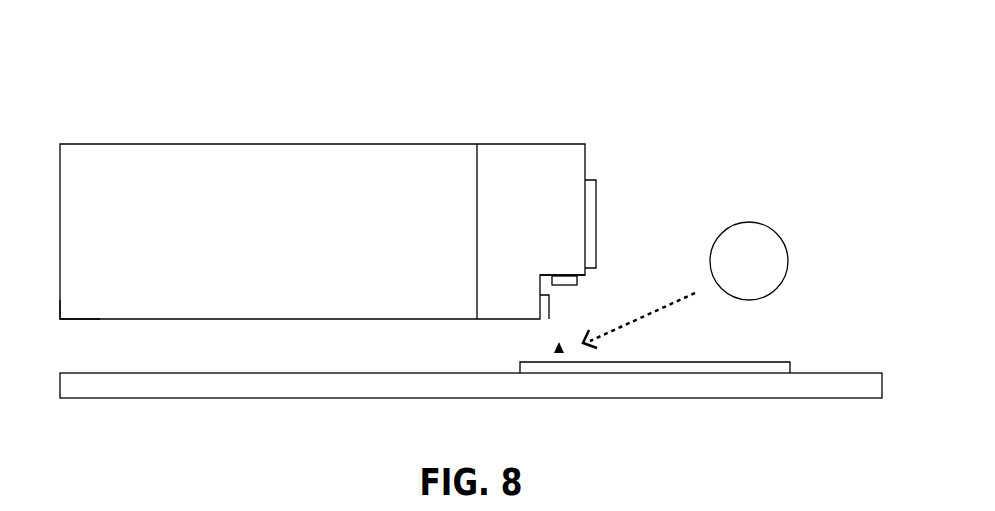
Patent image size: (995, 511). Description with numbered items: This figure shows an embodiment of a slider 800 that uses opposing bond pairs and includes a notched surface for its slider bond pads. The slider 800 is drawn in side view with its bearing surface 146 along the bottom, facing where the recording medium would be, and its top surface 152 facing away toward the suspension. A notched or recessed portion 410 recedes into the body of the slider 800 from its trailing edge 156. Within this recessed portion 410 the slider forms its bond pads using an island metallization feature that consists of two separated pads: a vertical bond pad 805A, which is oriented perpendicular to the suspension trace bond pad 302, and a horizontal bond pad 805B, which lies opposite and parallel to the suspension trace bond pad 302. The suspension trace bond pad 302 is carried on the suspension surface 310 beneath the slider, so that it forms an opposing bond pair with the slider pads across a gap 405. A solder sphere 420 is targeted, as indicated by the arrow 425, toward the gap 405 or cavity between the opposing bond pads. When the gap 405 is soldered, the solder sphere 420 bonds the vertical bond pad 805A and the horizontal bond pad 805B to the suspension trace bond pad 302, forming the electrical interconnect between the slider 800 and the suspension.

The slider 800 is at (701, 61).
The bearing surface 146 is at (234, 137).
The top surface 152 is at (63, 329).
The trailing edge 156 is at (594, 140).
The recessed portion 410 is at (530, 260).
The vertical bond pad 805A is at (545, 318).
The horizontal bond pad 805B is at (578, 281).
The solder sphere 420 is at (778, 231).
The arrow 425 is at (650, 320).
The suspension trace bond pad 302 is at (777, 362).
The suspension surface 310 is at (828, 372).
The gap 405 is at (559, 353).